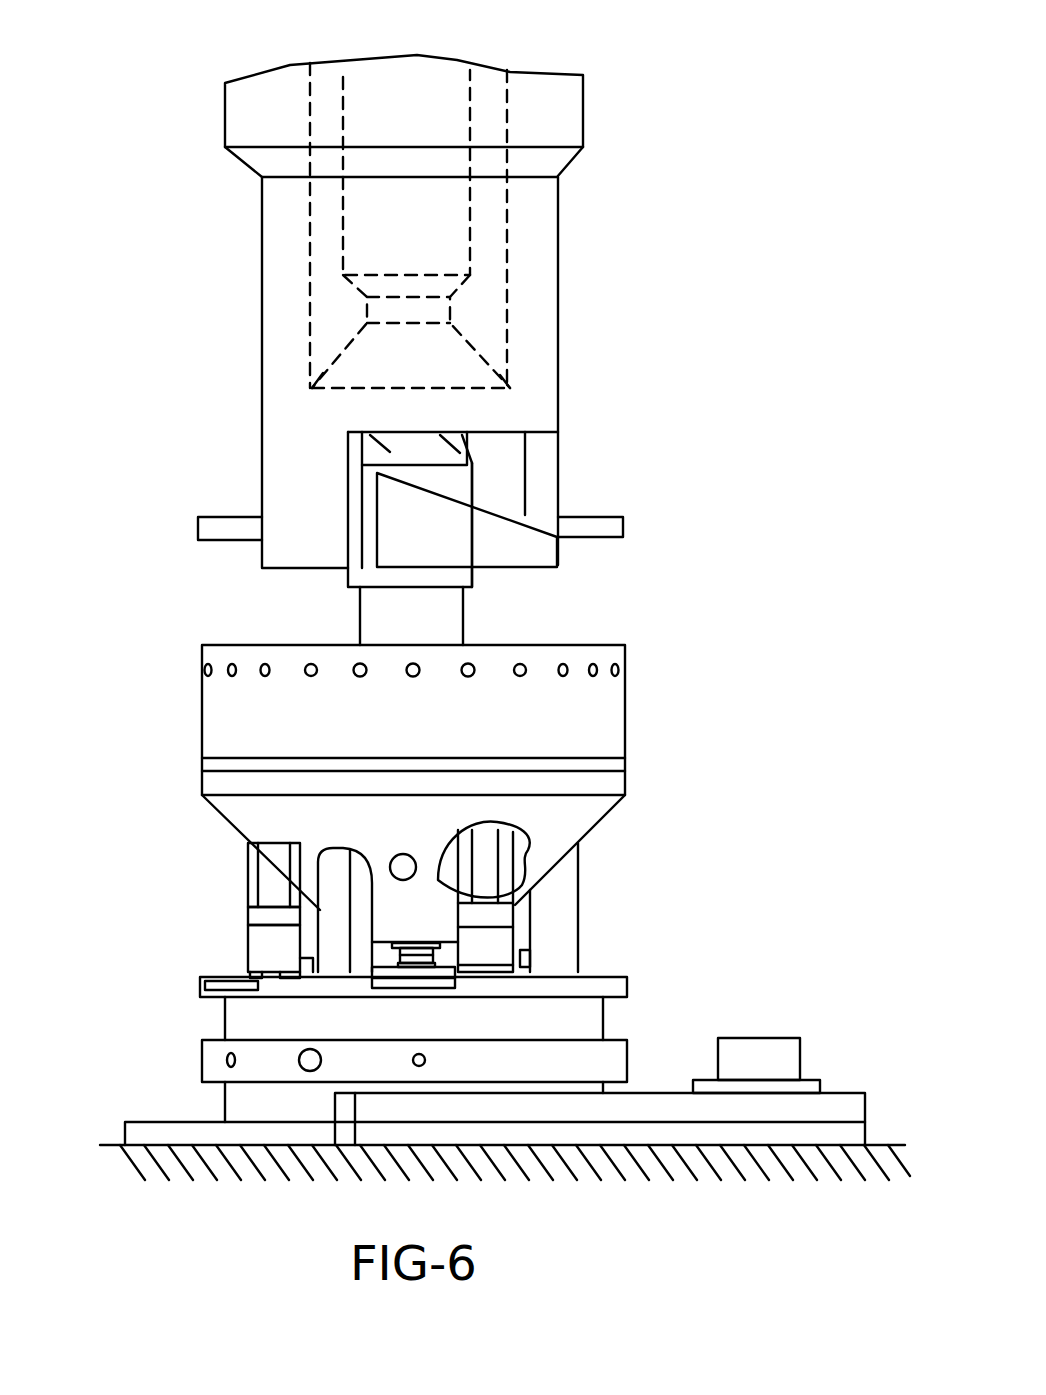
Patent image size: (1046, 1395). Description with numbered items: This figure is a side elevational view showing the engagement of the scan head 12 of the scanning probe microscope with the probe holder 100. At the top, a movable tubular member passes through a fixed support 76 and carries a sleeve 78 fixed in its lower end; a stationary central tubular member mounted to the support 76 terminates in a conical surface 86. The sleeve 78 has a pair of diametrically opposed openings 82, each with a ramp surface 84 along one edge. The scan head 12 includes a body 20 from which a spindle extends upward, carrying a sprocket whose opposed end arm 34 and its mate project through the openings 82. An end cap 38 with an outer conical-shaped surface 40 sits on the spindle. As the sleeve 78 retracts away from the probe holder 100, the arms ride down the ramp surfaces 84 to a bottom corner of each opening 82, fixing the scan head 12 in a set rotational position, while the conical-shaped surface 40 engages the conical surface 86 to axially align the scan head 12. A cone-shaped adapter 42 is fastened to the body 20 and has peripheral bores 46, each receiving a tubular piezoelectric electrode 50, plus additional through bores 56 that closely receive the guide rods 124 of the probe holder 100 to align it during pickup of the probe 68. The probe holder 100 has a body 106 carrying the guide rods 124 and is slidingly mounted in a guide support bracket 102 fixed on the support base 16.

The fixed support 76 is at (320, 122).
The sleeve 78 is at (272, 248).
The conical surface 86 is at (340, 355).
The end cap 38 is at (390, 452).
The conical-shaped surface 40 is at (478, 462).
The openings 82 is at (516, 440).
The ramp surfaces 84 is at (481, 507).
The end arm 34 is at (622, 525).
The body 20 is at (593, 707).
The scan head 12 is at (675, 718).
The cone-shaped adapter 42 is at (583, 810).
The through bores 56 is at (335, 893).
The bores 46 is at (528, 848).
The tubular piezoelectric electrode 50 is at (248, 893).
The guide rods 124 is at (248, 868).
The probe 68 is at (397, 957).
The probe holder 100 is at (180, 975).
The body 106 is at (590, 1023).
The guide support bracket 102 is at (827, 1095).
The support base 16 is at (880, 1140).